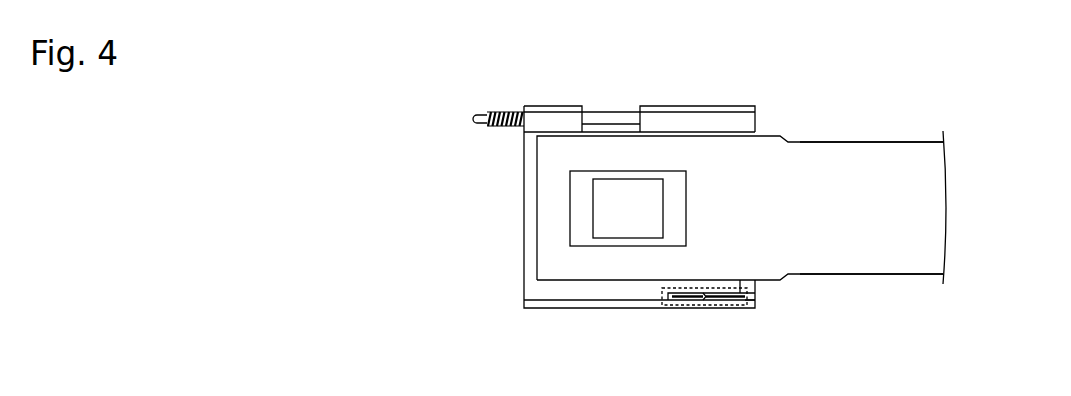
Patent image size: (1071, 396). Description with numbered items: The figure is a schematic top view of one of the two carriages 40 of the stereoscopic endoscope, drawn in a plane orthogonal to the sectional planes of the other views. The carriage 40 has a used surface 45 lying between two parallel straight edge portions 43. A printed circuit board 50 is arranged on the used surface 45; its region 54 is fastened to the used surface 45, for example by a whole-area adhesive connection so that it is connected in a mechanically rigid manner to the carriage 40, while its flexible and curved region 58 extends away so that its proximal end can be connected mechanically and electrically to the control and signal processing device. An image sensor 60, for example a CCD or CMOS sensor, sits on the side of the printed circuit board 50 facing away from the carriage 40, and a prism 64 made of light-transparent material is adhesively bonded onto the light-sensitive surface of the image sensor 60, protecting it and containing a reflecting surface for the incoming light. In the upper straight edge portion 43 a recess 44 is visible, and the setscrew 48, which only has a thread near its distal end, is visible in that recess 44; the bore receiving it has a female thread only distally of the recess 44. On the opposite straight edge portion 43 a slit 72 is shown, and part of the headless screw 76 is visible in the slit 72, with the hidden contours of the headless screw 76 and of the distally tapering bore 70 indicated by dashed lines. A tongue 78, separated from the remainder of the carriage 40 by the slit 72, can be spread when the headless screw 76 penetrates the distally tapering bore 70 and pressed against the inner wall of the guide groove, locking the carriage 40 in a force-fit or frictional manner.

The carriage 40 is at (318, 94).
The straight edge portion 43 is at (688, 110).
The recess 44 is at (602, 110).
The used surface 45 is at (530, 191).
The setscrew 48 is at (504, 110).
The printed circuit board 50 is at (732, 158).
The region 54 is at (740, 158).
The flexible and curved region 58 is at (893, 271).
The image sensor 60 is at (577, 222).
The prism 64 is at (597, 227).
The distally tapering bore 70 is at (662, 297).
The slit 72 is at (692, 298).
The headless screw 76 is at (733, 298).
The tongue 78 is at (756, 305).